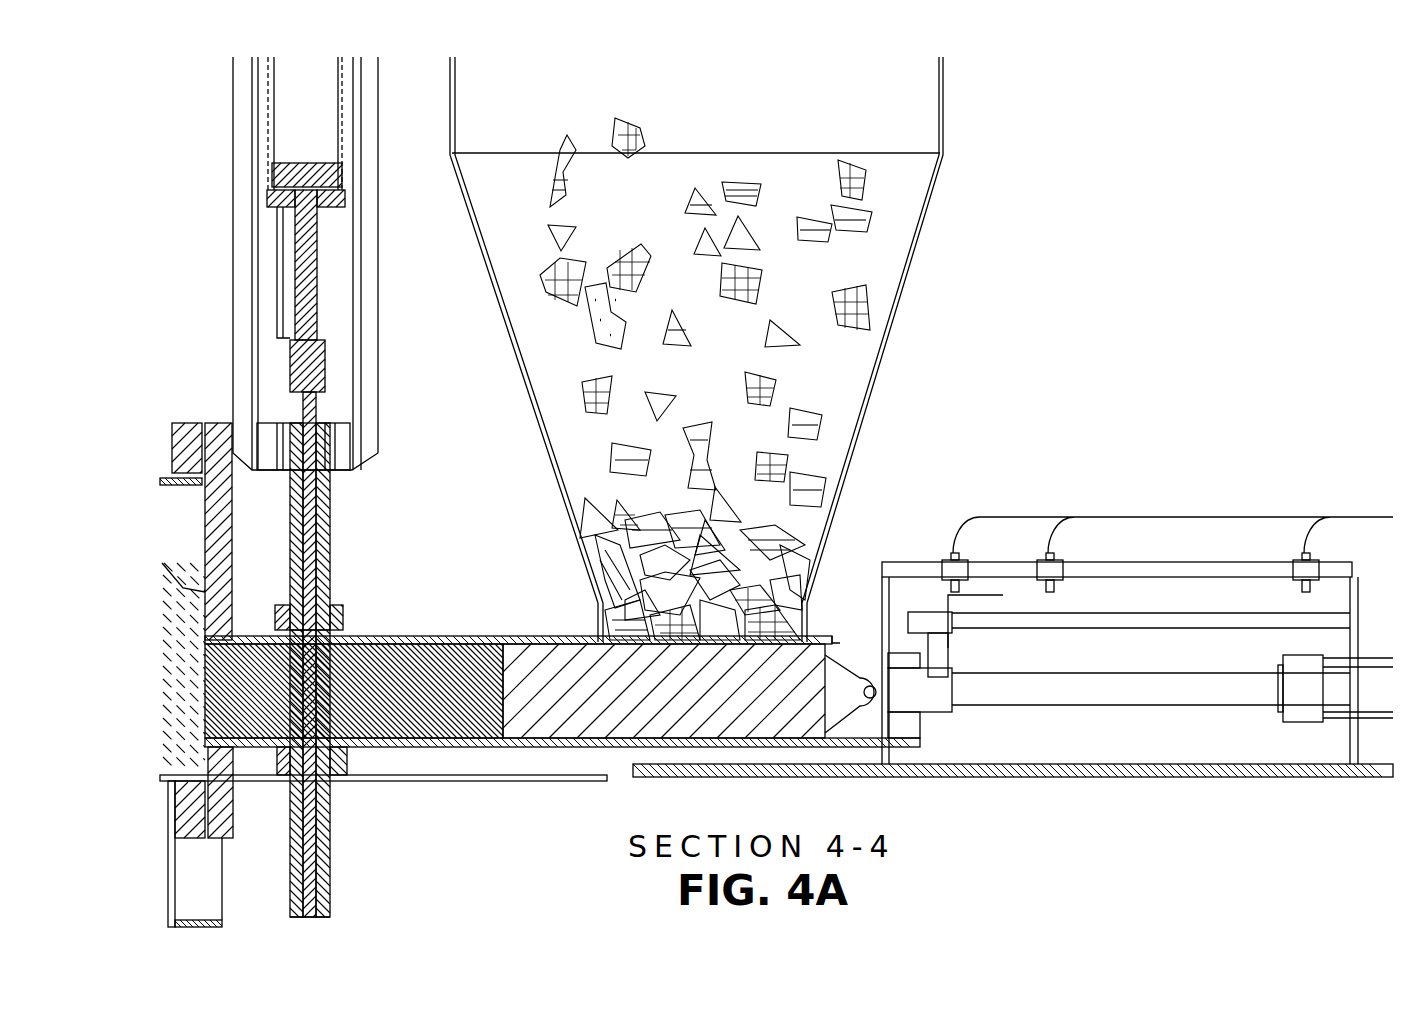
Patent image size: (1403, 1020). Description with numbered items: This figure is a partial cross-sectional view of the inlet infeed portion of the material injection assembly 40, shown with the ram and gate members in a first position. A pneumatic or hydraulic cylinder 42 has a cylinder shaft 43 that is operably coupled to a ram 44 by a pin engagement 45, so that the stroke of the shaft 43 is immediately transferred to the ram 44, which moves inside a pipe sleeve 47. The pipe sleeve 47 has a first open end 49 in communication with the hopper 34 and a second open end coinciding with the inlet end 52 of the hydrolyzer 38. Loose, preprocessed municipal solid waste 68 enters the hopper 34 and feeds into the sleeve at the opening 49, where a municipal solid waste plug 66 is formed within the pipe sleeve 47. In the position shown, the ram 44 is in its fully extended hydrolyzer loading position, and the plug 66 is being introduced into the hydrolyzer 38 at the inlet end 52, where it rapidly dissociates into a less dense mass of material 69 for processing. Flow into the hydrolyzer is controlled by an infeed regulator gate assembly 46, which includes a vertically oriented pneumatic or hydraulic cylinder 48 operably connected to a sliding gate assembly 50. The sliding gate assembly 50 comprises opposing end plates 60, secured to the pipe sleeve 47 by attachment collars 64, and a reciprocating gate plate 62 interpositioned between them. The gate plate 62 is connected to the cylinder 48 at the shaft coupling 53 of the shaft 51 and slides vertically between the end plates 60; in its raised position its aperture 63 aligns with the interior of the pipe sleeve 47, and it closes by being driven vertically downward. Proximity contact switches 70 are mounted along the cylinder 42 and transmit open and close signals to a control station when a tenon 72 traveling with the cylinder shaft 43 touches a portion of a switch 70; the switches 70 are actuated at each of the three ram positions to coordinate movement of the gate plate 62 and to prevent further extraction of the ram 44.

The hopper 34 is at (922, 222).
The hydrolyzer 38 is at (203, 510).
The material injection assembly 40 is at (1373, 653).
The pneumatic or hydraulic cylinder 42 is at (1385, 695).
The cylinder shaft 43 is at (990, 698).
The ram 44 is at (765, 710).
The pin engagement 45 is at (873, 697).
The infeed regulator gate assembly 46 is at (226, 265).
The pipe sleeve 47 is at (657, 740).
The pneumatic or hydraulic cylinder 48 is at (325, 143).
The first open end 49 is at (597, 612).
The sliding gate assembly 50 is at (337, 887).
The shaft 51 is at (318, 297).
The inlet end 52 is at (283, 445).
The shaft coupling 53 is at (310, 375).
The end plates 60 is at (322, 487).
The gate plate 62 is at (320, 513).
The aperture 63 is at (320, 850).
The attachment collars 64 is at (340, 620).
The municipal solid waste plug 66 is at (335, 780).
The municipal solid waste 68 is at (618, 135).
The less dense mass of material 69 is at (178, 612).
The proximity contact switches 70 is at (950, 553).
The tenon 72 is at (982, 592).